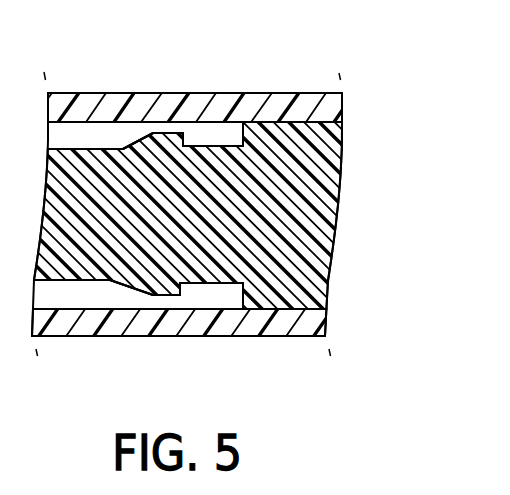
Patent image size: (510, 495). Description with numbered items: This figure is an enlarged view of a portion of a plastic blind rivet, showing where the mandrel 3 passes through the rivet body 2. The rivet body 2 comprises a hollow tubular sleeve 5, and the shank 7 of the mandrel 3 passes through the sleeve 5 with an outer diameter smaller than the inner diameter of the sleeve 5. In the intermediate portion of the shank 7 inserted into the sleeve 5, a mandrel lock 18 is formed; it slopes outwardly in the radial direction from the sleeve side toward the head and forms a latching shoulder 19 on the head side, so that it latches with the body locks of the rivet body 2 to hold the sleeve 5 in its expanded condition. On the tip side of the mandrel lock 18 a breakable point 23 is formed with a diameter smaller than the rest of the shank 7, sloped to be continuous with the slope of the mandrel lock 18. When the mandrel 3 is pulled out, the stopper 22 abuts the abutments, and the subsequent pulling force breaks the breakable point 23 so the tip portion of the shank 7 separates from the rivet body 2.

The rivet body 2 is at (320, 81).
The mandrel 3 is at (352, 211).
The sleeve 5 is at (311, 337).
The shank 7 is at (303, 252).
The mandrel lock 18 is at (156, 133).
The latching shoulder 19 is at (193, 133).
The stopper 22 is at (243, 126).
The breakable point 23 is at (114, 148).